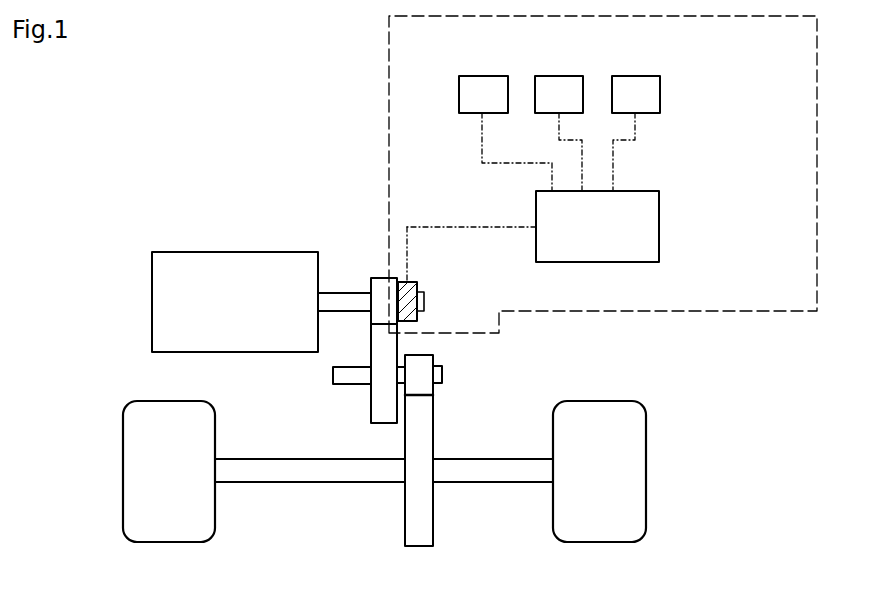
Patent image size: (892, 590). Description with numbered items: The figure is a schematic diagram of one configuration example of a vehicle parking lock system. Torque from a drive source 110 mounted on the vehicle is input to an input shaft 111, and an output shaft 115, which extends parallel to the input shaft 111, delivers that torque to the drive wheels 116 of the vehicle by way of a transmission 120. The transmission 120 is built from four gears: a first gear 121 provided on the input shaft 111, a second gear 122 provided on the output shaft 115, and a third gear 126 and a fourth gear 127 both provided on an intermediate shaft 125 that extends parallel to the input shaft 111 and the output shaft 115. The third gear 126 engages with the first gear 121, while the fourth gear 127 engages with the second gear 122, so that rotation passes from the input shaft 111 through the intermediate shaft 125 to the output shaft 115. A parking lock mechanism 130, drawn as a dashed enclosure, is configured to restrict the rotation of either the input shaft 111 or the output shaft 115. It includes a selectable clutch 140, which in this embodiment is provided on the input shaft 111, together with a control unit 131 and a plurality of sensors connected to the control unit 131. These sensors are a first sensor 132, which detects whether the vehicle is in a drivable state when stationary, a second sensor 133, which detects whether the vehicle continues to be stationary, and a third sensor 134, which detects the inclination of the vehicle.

The drive source 110 is at (208, 260).
The input shaft 111 is at (345, 298).
The output shaft 115 is at (346, 475).
The drive wheels 116 is at (147, 415).
The transmission 120 is at (398, 341).
The first gear 121 is at (378, 287).
The second gear 122 is at (425, 515).
The intermediate shaft 125 is at (337, 376).
The third gear 126 is at (377, 405).
The fourth gear 127 is at (427, 373).
The parking lock mechanism 130 is at (603, 223).
The control unit 131 is at (650, 220).
The first sensor 132 is at (470, 83).
The second sensor 133 is at (546, 83).
The third sensor 134 is at (622, 83).
The selectable clutch 140 is at (415, 285).